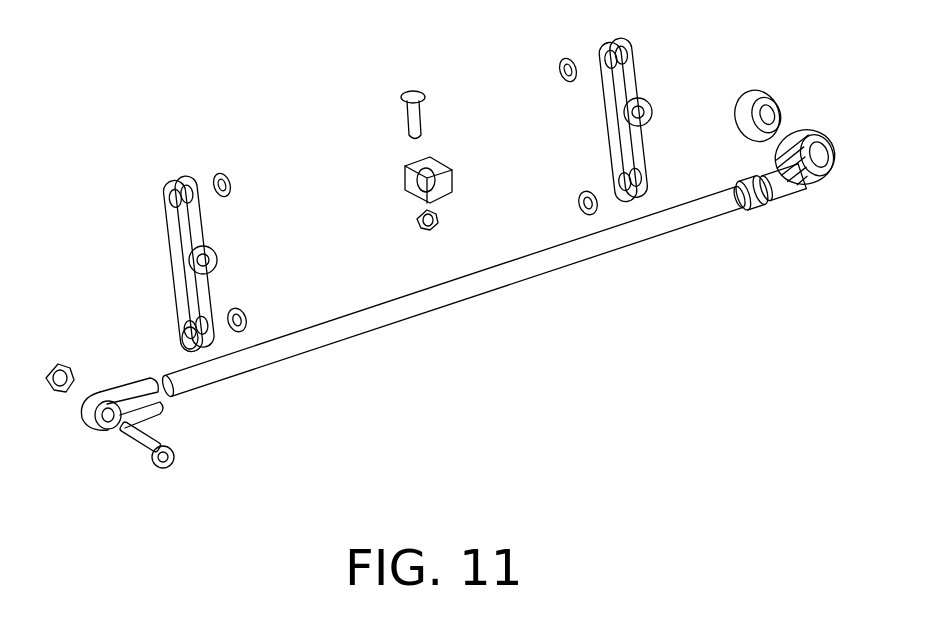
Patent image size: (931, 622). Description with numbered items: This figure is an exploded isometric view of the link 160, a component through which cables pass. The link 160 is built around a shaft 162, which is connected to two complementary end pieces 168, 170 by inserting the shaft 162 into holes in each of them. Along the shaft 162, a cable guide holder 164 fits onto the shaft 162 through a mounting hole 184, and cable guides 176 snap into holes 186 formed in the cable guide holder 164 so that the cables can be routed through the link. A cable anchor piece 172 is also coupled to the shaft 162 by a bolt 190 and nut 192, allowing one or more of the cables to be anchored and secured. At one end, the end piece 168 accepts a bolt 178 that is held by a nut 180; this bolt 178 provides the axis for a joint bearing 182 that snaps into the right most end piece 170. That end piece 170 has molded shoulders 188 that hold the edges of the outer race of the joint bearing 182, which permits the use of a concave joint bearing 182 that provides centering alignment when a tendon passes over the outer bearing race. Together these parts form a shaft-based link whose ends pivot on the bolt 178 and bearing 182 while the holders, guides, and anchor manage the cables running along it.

The link 160 is at (152, 127).
The shaft 162 is at (292, 348).
The cable guide holder 164 is at (168, 230).
The end piece 168 is at (137, 397).
The end piece 170 is at (785, 187).
The cable anchor piece 172 is at (437, 187).
The cable guide 176 is at (226, 176).
The bolt 178 is at (153, 458).
The nut 180 is at (72, 362).
The joint bearing 182 is at (740, 100).
The mounting hole 184 is at (205, 262).
The hole 186 is at (180, 337).
The molded shoulder 188 is at (810, 125).
The bolt 190 is at (398, 117).
The nut 192 is at (417, 222).